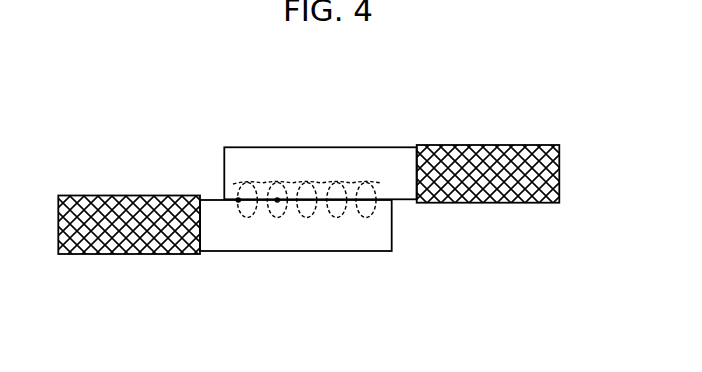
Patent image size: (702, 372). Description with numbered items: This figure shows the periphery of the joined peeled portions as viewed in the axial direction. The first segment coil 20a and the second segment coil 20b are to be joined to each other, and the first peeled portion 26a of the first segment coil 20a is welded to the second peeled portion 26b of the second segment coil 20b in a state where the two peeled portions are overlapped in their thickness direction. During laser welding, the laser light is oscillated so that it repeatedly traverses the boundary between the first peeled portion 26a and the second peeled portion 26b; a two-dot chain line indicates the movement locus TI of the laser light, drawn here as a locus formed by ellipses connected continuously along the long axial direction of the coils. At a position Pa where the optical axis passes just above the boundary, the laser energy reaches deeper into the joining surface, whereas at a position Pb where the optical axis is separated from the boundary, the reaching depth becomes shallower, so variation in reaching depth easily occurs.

The first segment coil 20a is at (488, 160).
The second segment coil 20b is at (118, 197).
The first peeled portion 26a is at (372, 155).
The second peeled portion 26b is at (347, 243).
The movement locus TI is at (375, 210).
The position Pa is at (238, 203).
The position Pb is at (277, 203).